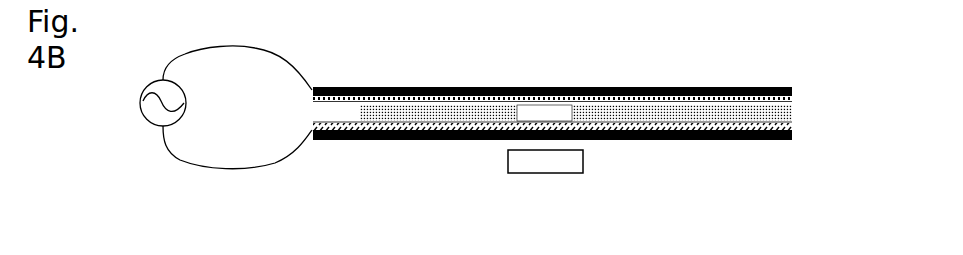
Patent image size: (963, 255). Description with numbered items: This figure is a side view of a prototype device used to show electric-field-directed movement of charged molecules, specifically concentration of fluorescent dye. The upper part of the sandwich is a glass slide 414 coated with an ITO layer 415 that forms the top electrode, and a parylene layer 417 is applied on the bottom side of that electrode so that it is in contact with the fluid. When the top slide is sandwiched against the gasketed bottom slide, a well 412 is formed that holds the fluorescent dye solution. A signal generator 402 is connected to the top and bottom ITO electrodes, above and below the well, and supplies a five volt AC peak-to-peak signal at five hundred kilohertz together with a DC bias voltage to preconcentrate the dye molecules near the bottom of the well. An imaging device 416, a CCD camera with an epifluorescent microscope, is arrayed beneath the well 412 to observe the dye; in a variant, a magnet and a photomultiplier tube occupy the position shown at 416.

The signal generator 402 is at (162, 106).
The well 412 is at (542, 110).
The glass slide 414 is at (343, 87).
The ITO layer 415 is at (793, 95).
The imaging device 416 is at (530, 161).
The parylene layer 417 is at (543, 110).